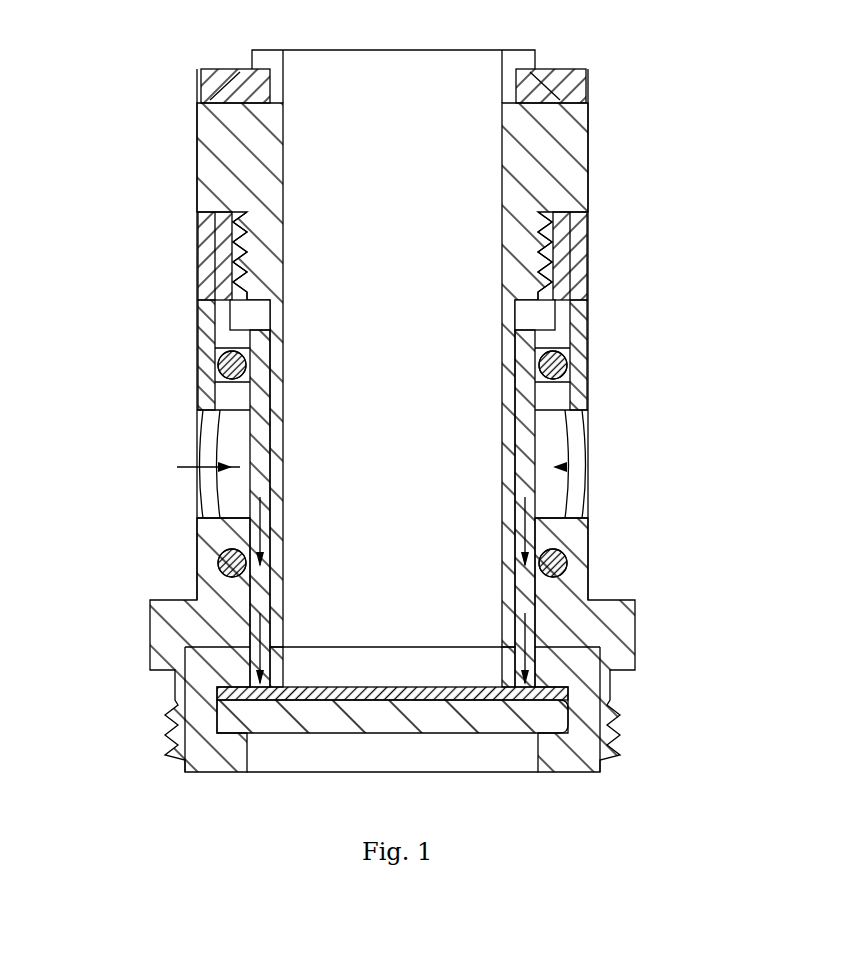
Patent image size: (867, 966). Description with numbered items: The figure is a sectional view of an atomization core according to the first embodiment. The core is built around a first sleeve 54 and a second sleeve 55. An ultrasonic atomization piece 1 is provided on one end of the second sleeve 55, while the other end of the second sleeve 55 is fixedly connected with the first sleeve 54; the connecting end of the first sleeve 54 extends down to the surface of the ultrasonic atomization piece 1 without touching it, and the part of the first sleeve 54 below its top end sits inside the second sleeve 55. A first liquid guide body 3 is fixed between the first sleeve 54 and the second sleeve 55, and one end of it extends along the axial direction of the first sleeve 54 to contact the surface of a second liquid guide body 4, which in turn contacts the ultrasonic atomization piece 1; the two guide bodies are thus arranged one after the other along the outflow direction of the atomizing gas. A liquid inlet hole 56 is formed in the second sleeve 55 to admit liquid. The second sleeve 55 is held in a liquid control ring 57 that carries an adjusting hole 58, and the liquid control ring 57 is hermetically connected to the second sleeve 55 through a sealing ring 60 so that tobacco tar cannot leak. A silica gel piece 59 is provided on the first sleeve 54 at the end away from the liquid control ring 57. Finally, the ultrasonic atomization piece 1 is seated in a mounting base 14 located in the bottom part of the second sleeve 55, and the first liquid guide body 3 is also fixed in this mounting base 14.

The ultrasonic atomization piece 1 is at (505, 718).
The first liquid guide body 3 is at (210, 430).
The second liquid guide body 4 is at (612, 697).
The mounting base 14 is at (210, 670).
The first sleeve 54 is at (243, 155).
The second sleeve 55 is at (215, 268).
The liquid inlet hole 56 is at (535, 467).
The liquid control ring 57 is at (582, 278).
The adjusting hole 58 is at (583, 440).
The silica gel piece 59 is at (556, 87).
The sealing ring 60 is at (556, 365).